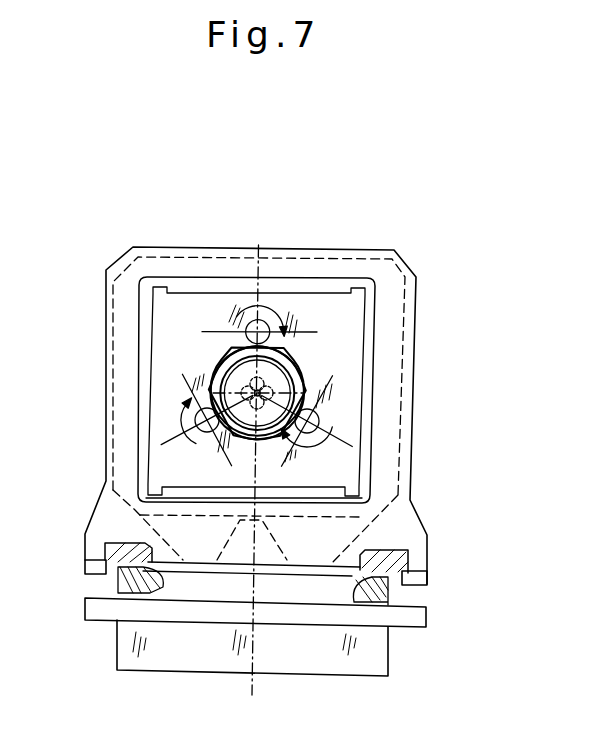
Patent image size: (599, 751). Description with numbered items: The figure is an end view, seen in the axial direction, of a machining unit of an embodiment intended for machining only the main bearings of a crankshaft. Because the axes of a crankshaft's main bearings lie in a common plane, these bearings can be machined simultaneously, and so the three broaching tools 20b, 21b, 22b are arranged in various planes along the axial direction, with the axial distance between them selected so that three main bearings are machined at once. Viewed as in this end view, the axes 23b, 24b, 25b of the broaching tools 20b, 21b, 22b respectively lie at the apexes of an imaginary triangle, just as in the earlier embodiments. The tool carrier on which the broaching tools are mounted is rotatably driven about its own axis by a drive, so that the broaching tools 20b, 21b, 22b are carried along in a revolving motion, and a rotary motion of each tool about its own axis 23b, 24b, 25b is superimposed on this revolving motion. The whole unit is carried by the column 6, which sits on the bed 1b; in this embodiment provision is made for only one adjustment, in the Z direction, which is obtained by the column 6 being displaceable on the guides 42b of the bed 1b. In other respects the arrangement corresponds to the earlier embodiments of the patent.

The column 6 is at (133, 295).
The broaching tool 20b is at (280, 305).
The broaching tool 21b is at (335, 412).
The broaching tool 22b is at (172, 410).
The axis of broaching tool 23b is at (268, 328).
The axis of broaching tool 24b is at (319, 421).
The axis of broaching tool 25b is at (255, 394).
The guides 42b is at (408, 560).
The bed 1b is at (368, 653).